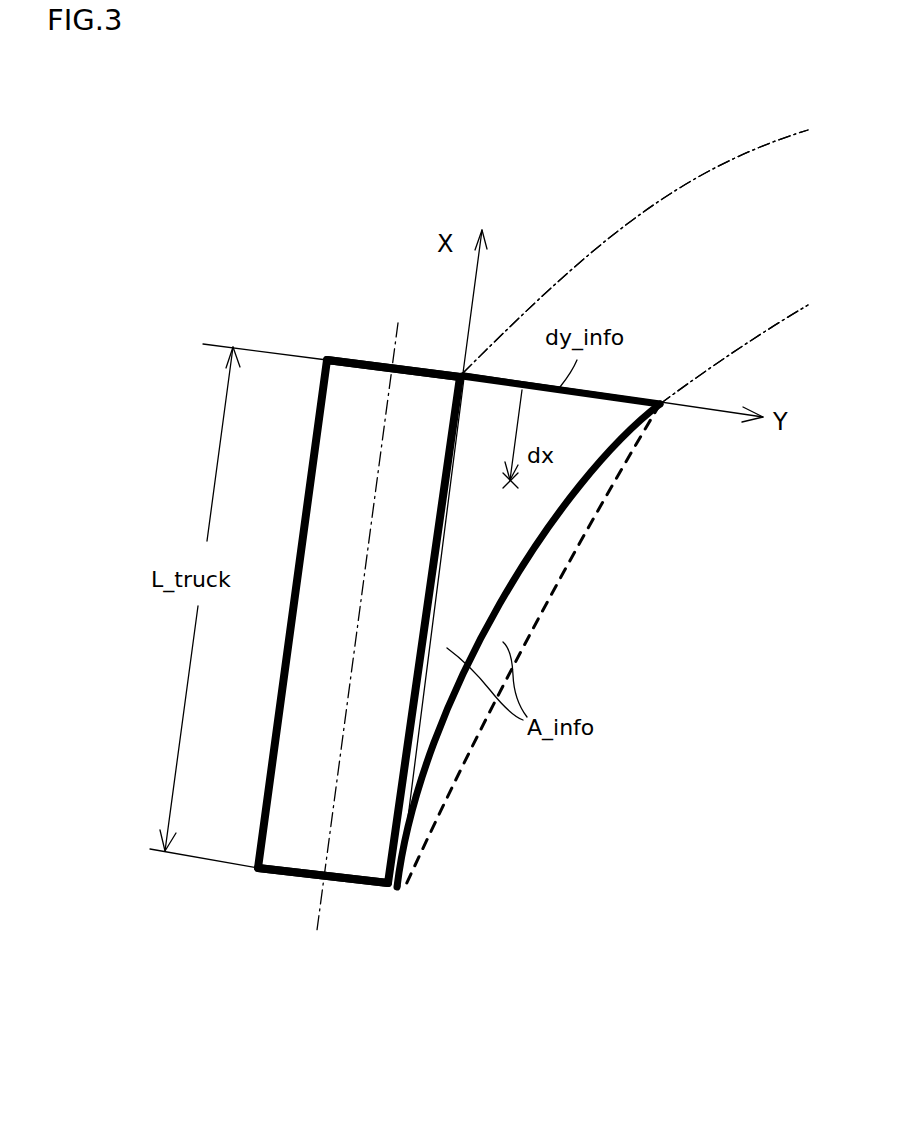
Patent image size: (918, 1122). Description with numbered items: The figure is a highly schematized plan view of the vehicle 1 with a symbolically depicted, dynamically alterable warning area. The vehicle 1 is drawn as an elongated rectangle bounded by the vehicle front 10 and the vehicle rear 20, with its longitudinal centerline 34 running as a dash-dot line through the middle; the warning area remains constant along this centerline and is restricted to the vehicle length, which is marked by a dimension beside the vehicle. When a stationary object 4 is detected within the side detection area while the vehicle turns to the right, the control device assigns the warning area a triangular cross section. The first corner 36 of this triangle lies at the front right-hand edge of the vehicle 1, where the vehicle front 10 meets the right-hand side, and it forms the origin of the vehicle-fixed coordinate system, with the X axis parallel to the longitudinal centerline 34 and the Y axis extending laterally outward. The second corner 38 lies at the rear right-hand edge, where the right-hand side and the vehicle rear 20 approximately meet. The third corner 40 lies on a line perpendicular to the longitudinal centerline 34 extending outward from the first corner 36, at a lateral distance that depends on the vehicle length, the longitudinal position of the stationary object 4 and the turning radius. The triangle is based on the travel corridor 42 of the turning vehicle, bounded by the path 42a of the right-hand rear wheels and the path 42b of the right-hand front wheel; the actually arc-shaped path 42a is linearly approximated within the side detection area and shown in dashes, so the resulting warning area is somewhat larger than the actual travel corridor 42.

The vehicle 1 is at (338, 608).
The vehicle front 10 is at (368, 362).
The vehicle rear 20 is at (358, 888).
The longitudinal centerline 34 is at (321, 628).
The first corner 36 is at (462, 370).
The second corner 38 is at (399, 888).
The third corner 40 is at (663, 402).
The travel corridor 42 is at (753, 264).
The path of the right-hand rear wheels 42a is at (776, 332).
The path of the right-hand front wheel 42b is at (697, 186).
The stationary object 4 is at (512, 481).